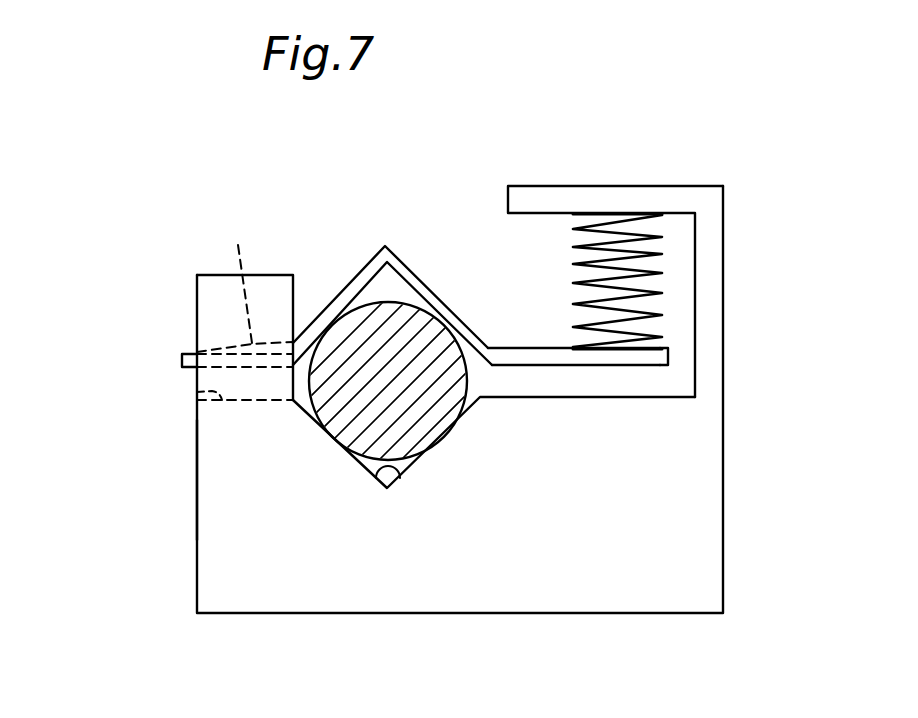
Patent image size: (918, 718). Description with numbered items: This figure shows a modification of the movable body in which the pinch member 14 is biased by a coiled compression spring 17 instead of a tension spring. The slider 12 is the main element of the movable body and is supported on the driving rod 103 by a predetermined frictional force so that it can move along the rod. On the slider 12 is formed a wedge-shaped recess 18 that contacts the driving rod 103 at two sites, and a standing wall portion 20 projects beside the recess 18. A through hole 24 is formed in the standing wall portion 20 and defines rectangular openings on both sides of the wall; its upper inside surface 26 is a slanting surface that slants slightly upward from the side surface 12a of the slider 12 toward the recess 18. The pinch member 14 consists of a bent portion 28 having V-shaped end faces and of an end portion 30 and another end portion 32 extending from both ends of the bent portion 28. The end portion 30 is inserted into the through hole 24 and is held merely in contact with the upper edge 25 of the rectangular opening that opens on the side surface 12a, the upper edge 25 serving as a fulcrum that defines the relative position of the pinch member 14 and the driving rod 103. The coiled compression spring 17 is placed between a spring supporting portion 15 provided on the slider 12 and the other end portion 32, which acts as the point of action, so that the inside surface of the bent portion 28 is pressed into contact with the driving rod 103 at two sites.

The slider 12 is at (197, 568).
The side surface of the slider 12a is at (197, 483).
The pinch member 14 is at (409, 267).
The spring supporting portion 15 is at (603, 186).
The coiled compression spring 17 is at (580, 281).
The wedge-shaped recess 18 is at (397, 474).
The standing wall portion 20 is at (196, 291).
The through hole 24 is at (196, 392).
The upper edge of the rectangular opening 25 is at (196, 352).
The upper inside surface of the through hole 26 is at (237, 279).
The bent portion 28 is at (447, 305).
The end portion 30 is at (182, 371).
The other end portion 32 is at (647, 365).
The driving rod 103 is at (365, 302).